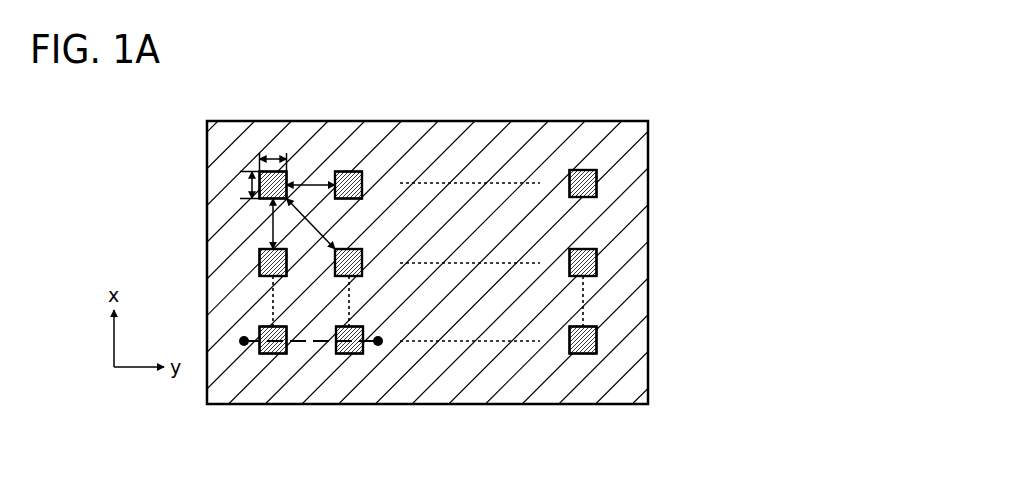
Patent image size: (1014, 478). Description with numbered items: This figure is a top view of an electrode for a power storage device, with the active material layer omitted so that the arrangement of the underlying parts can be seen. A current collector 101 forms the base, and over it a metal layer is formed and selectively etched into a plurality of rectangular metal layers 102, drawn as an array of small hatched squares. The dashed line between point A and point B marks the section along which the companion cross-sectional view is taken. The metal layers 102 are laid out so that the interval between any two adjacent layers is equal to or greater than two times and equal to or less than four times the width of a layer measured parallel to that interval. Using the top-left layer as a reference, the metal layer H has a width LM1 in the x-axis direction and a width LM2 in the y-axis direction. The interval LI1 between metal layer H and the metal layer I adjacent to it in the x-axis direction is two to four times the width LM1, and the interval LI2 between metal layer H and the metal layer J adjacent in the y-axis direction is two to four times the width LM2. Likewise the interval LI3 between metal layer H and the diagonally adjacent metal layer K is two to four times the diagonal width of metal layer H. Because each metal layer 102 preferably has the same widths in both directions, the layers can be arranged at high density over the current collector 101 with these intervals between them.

The current collector 101 is at (637, 399).
The metal layer 102 is at (578, 170).
The metal layer 102H H is at (273, 185).
The metal layer 102I I is at (348, 185).
The metal layer 102J J is at (273, 262).
The metal layer 102K K is at (348, 262).
The point A of line A-B A is at (236, 342).
The point B of line A- B is at (387, 342).
The width LM1 is at (270, 151).
The width LM2 is at (235, 188).
The interval LI1 is at (311, 175).
The interval LI2 is at (255, 224).
The interval LI3 is at (314, 224).